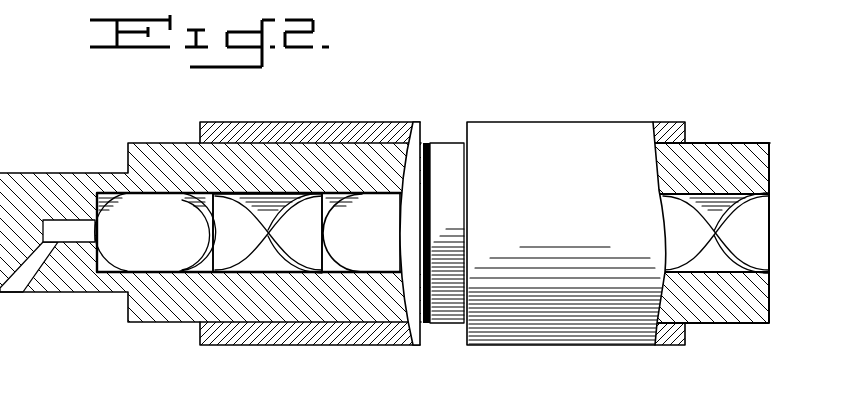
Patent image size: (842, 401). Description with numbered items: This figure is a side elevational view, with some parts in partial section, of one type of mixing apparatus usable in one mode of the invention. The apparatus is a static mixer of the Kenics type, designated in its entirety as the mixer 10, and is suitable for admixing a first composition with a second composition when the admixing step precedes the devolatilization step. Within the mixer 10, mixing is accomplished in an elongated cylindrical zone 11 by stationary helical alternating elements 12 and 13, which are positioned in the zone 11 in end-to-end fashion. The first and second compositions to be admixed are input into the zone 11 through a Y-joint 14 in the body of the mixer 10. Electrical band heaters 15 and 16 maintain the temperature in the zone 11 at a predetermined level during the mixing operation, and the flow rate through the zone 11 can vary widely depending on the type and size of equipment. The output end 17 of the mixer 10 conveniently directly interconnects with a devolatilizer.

The mixer 10 is at (165, 142).
The elongated cylindrical zone 11 is at (205, 263).
The stationary helical alternating element 12 is at (138, 253).
The stationary helical alternating element 13 is at (227, 260).
The Y-joint 14 is at (61, 227).
The electrical band heater 15 is at (333, 123).
The electrical band heater 16 is at (541, 122).
The output end 17 is at (780, 237).